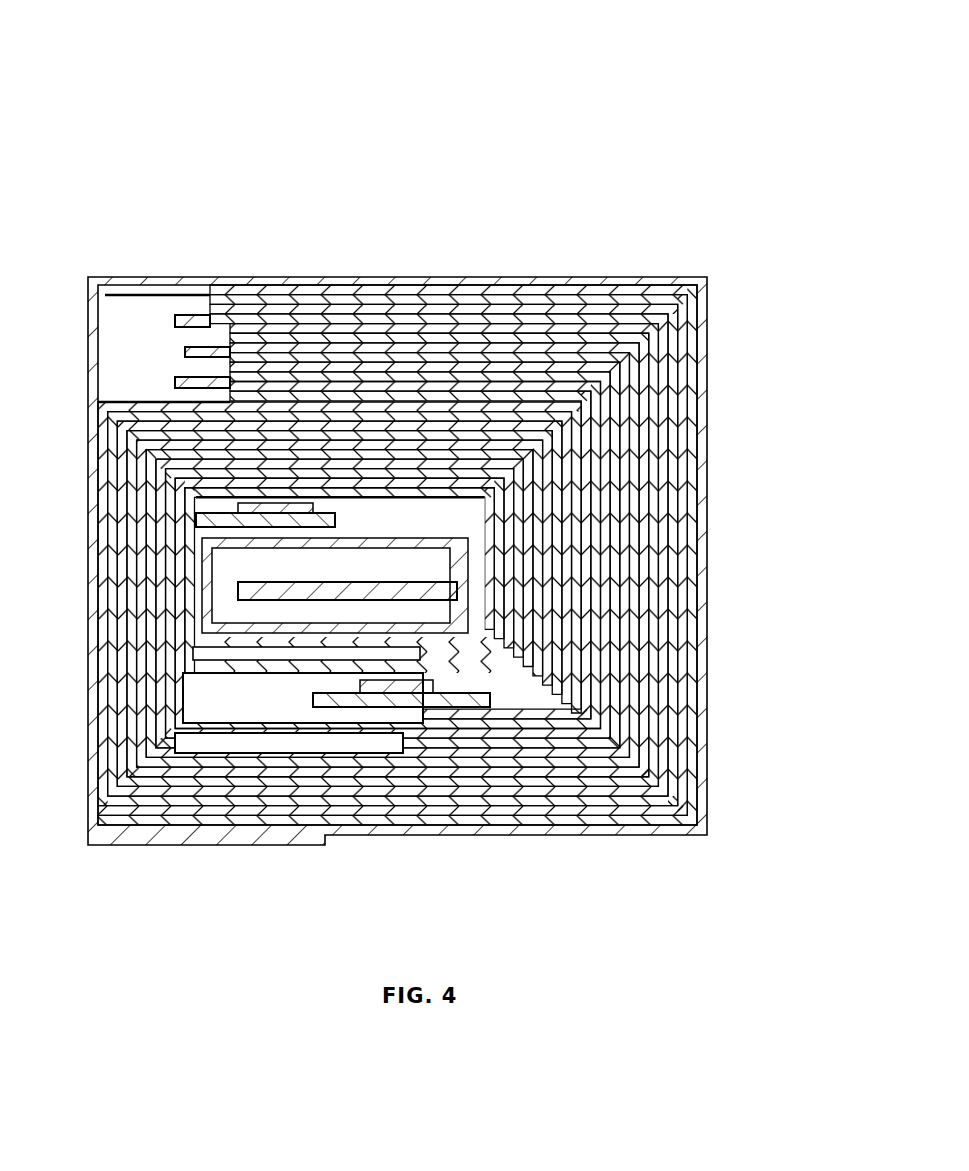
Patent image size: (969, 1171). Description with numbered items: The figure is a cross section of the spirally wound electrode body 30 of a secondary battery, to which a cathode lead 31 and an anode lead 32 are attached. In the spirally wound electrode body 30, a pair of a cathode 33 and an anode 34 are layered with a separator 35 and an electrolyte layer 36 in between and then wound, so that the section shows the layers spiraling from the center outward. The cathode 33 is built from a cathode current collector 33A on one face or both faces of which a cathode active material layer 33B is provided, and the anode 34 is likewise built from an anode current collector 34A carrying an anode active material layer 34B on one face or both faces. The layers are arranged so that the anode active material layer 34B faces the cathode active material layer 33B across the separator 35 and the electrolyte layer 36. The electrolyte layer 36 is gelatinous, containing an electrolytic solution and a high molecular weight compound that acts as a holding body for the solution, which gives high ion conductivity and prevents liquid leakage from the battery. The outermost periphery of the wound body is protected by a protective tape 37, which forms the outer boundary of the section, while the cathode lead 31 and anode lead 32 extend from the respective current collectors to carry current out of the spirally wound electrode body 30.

The spirally wound electrode body 30 is at (402, 451).
The cathode lead 31 is at (258, 512).
The anode lead 32 is at (387, 690).
The cathode 33 is at (196, 264).
The cathode current collector 33A is at (193, 322).
The cathode active material layer 33B is at (263, 358).
The anode 34 is at (397, 482).
The anode current collector 34A is at (348, 300).
The anode active material layer 34B is at (441, 398).
The separator 35 is at (494, 385).
The electrolyte layer 36 is at (577, 388).
The protective tape 37 is at (668, 282).